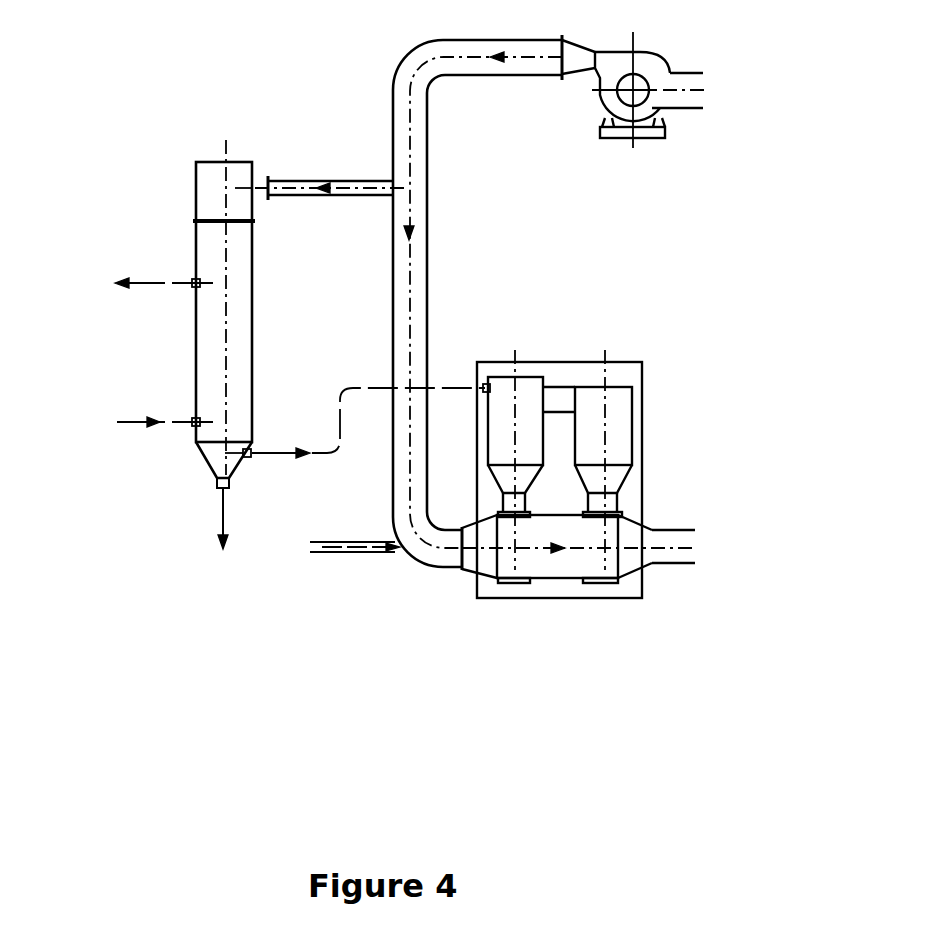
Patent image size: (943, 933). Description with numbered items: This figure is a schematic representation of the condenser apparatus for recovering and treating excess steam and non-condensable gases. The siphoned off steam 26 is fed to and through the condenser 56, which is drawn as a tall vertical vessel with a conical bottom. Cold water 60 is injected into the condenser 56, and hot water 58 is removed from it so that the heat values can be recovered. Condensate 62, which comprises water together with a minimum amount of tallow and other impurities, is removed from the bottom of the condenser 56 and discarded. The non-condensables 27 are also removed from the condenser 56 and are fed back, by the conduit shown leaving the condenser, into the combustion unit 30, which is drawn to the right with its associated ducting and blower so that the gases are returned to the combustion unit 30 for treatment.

The siphoned off steam 26 is at (321, 164).
The non-condensables 27 is at (355, 444).
The combustion unit 30 is at (542, 375).
The condenser 56 is at (225, 162).
The hot water 58 is at (148, 288).
The cold water 60 is at (148, 423).
The condensate 62 is at (226, 537).